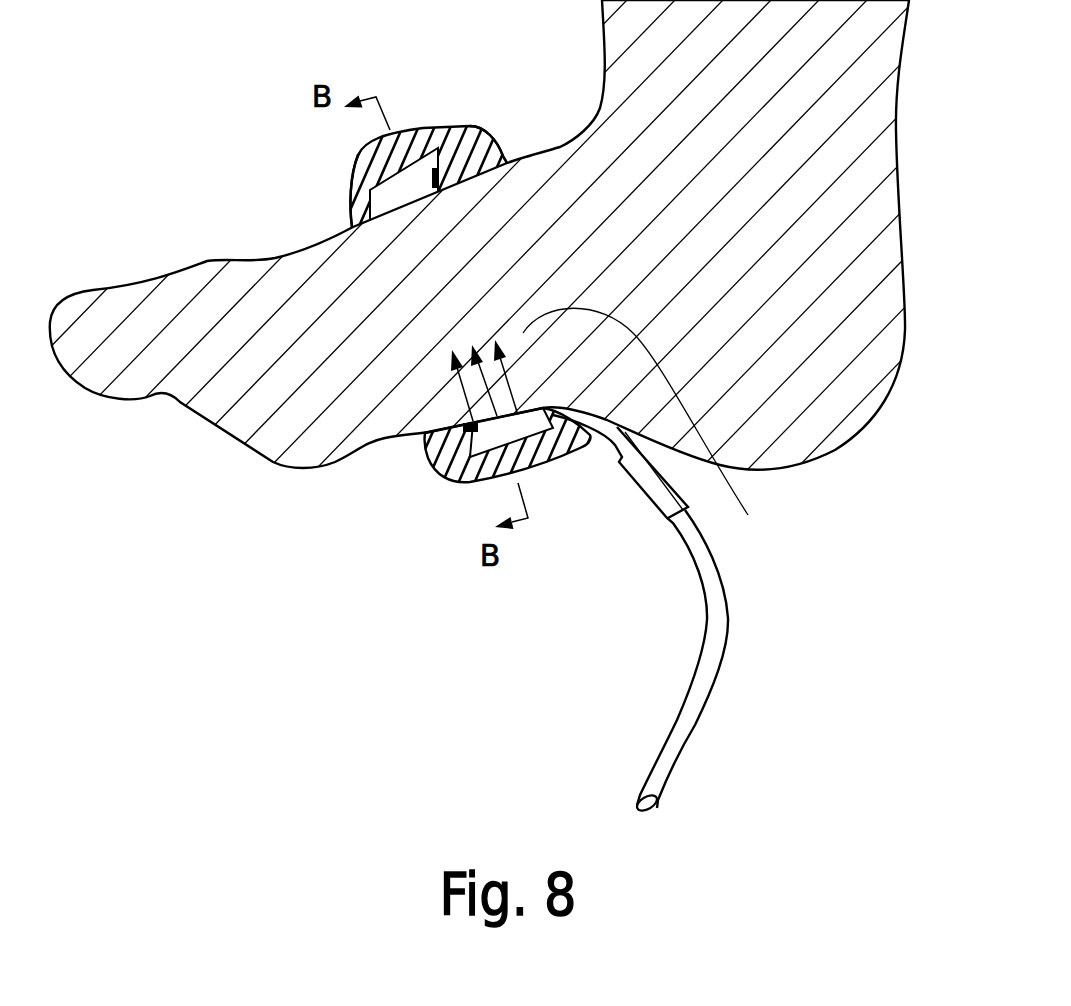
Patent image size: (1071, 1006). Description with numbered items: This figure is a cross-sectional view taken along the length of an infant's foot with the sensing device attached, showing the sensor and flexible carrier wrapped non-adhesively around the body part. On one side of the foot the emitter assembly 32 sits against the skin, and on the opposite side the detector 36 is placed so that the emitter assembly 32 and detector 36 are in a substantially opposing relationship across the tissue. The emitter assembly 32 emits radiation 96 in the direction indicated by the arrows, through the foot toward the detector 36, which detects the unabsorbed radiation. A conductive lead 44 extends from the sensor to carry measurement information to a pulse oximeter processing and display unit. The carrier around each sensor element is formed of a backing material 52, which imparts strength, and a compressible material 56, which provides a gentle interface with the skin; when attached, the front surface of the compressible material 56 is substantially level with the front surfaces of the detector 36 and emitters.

The emitter assembly 32 is at (452, 480).
The detector 36 is at (478, 129).
The conductive lead 44 is at (695, 712).
The backing material 52 is at (449, 127).
The compressible material 56 is at (355, 210).
The radiation 96 is at (661, 420).